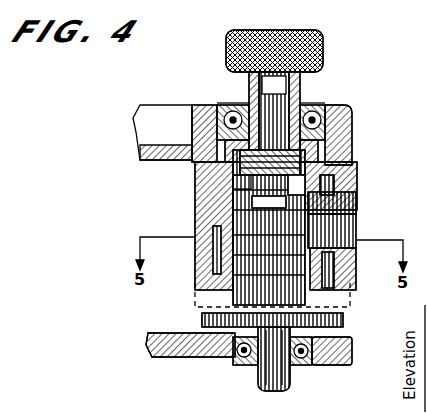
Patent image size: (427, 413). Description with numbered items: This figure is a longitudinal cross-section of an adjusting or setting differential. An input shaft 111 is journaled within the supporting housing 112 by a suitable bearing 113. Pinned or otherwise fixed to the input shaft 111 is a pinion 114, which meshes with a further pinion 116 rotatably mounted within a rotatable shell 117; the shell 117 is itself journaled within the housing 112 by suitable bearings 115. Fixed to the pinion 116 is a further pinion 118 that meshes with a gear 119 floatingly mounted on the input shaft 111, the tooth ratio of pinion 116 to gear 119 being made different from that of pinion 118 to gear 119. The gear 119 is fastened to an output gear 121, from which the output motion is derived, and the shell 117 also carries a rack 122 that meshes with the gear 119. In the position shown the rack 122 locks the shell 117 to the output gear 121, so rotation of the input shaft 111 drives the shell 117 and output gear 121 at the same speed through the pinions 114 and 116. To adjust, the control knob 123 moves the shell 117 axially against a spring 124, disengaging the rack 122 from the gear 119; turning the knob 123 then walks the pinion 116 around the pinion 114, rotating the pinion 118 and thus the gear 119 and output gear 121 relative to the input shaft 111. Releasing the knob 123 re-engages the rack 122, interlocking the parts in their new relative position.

The input shaft 111 is at (290, 370).
The supporting housing 112 is at (351, 118).
The bearing 113 is at (247, 364).
The pinion 114 is at (236, 189).
The bearings 115 is at (233, 102).
The pinion 116 is at (356, 202).
The rotatable shell 117 is at (350, 176).
The pinion 118 is at (356, 232).
The gear 119 is at (205, 216).
The output gear 121 is at (345, 318).
The rack 122 is at (206, 243).
The control knob 123 is at (272, 30).
The spring 124 is at (298, 100).